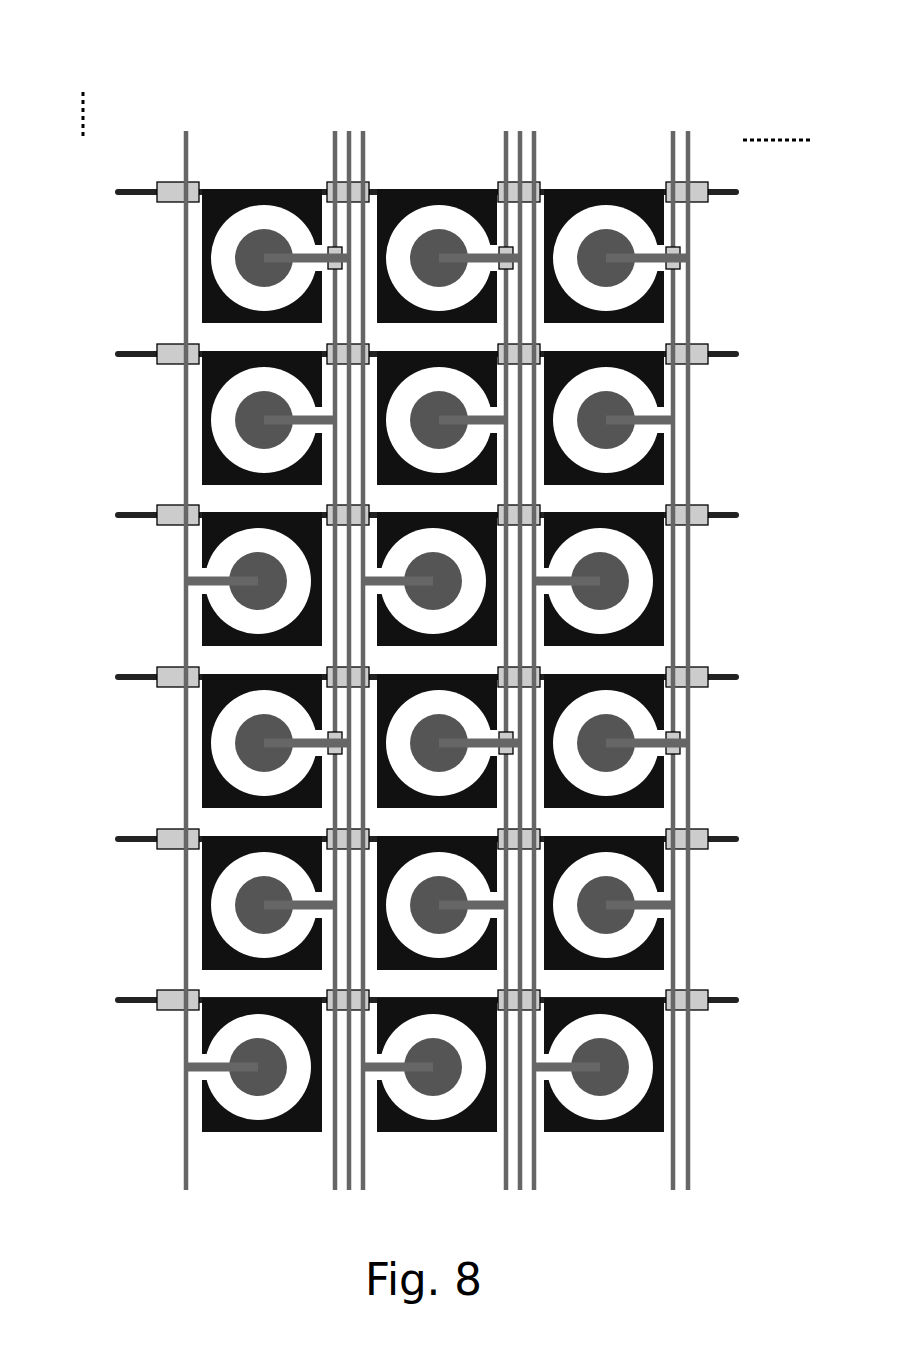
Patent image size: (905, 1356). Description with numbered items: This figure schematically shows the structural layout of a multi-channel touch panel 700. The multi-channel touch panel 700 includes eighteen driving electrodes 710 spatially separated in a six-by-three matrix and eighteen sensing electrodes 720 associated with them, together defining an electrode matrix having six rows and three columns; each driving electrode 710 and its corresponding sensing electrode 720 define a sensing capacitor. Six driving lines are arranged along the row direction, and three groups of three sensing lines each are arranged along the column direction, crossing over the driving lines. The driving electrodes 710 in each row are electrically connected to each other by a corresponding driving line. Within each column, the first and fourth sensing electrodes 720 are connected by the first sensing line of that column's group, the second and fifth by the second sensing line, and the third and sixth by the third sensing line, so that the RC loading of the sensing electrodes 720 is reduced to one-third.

The multi-channel touch panel 700 is at (460, 43).
The driving electrode 710 is at (297, 1123).
The sensing electrode 720 is at (243, 1066).